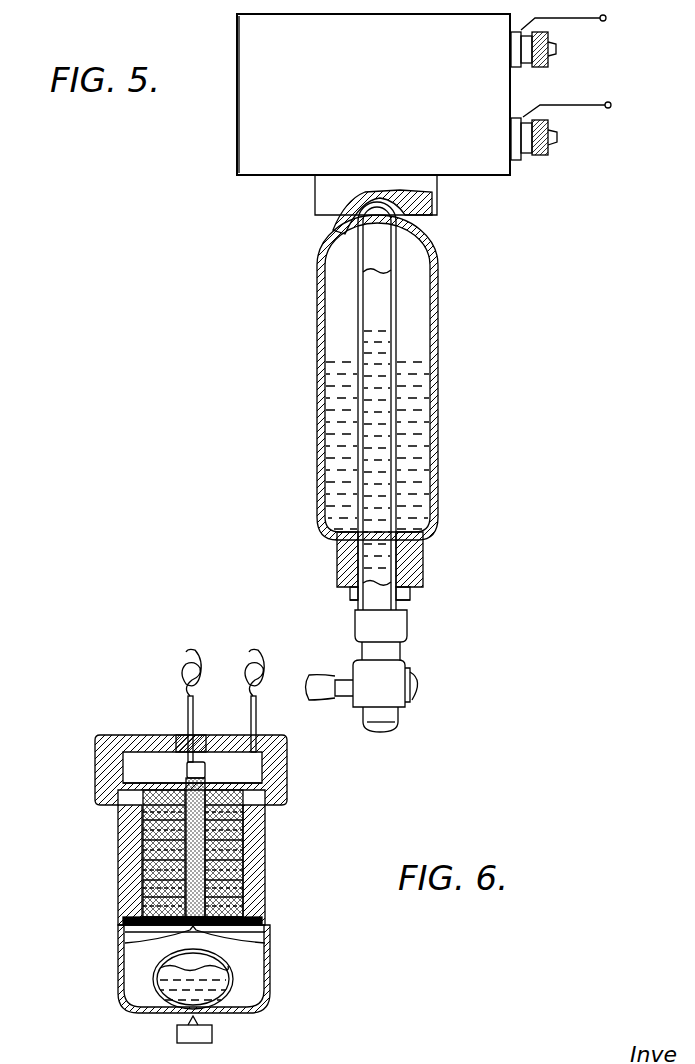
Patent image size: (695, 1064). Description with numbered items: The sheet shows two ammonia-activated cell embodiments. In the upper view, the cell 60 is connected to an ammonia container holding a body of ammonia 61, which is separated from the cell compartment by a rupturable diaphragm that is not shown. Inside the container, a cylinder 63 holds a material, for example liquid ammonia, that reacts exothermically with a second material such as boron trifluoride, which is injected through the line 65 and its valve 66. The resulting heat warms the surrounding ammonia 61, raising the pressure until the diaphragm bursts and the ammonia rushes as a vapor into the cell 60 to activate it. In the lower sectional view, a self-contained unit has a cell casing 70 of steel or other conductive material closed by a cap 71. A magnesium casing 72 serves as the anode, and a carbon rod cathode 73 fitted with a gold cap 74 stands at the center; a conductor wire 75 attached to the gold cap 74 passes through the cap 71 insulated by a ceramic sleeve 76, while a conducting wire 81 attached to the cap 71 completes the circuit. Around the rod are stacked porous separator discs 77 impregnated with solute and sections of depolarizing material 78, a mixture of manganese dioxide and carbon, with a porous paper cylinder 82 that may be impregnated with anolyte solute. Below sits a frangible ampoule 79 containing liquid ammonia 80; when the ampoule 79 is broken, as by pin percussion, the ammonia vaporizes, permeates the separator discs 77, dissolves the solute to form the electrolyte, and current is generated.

In FIG. 5, the cell 60 is at (392, 96).
In FIG. 5, the ammonia 61 is at (412, 456).
In FIG. 5, the cylinder 63 is at (397, 345).
In FIG. 5, the line 65 is at (399, 719).
In FIG. 5, the valve 66 is at (392, 676).
In FIG. 6, the cell casing 70 is at (270, 970).
In FIG. 6, the cap 71 is at (287, 748).
In FIG. 6, the magnesium casing 72 is at (255, 870).
In FIG. 6, the carbon rod cathode 73 is at (192, 767).
In FIG. 6, the gold cap 74 is at (186, 768).
In FIG. 6, the conductor wire 75 is at (195, 717).
In FIG. 6, the ceramic sleeve 76 is at (178, 736).
In FIG. 6, the porous separator discs 77 is at (230, 804).
In FIG. 6, the sections of depolarizing material 78 is at (238, 848).
In FIG. 6, the frangible ampoule 79 is at (155, 965).
In FIG. 6, the liquid ammonia 80 is at (185, 992).
In FIG. 6, the conducting wire 81 is at (257, 710).
In FIG. 6, the porous paper cylinder 82 is at (140, 826).